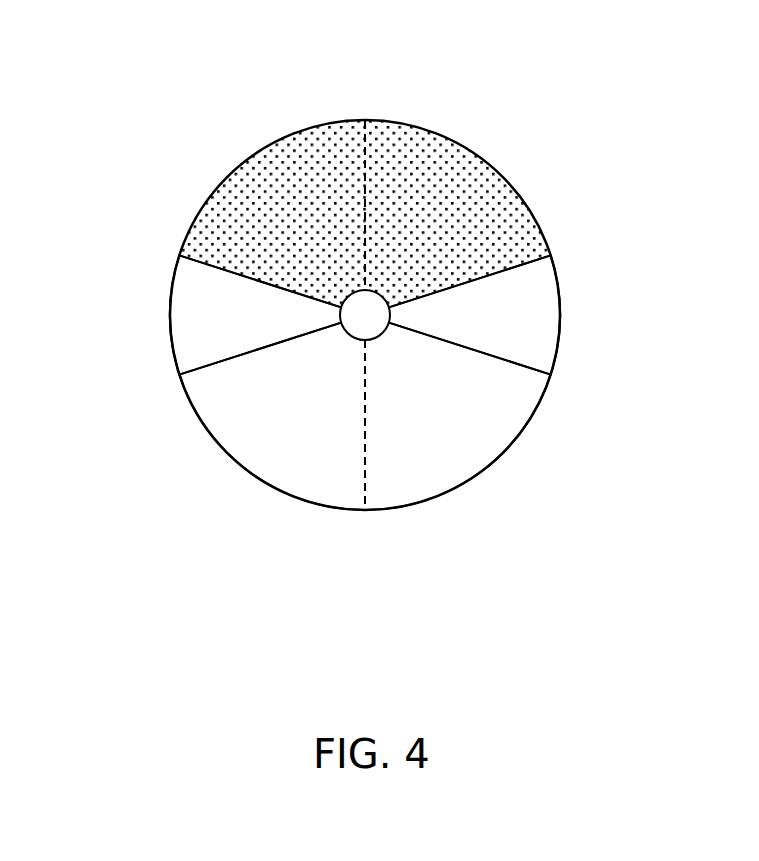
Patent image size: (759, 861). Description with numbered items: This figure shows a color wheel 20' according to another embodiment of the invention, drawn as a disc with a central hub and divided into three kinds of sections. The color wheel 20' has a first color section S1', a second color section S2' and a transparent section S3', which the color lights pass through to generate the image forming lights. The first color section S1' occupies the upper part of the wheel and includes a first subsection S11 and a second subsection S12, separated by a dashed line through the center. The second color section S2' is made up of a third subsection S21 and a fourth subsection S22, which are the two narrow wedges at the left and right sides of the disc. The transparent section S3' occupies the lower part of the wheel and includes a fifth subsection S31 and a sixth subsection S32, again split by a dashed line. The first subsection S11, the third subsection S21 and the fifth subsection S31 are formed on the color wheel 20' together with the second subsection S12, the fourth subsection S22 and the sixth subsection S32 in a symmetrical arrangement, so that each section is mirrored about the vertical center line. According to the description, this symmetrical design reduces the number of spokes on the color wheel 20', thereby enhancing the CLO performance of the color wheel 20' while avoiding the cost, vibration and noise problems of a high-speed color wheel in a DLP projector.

The color wheel 20' is at (450, 270).
The first color section S1' is at (364, 166).
The first subsection S11 is at (310, 160).
The second subsection S12 is at (458, 192).
The second color section S2' is at (355, 487).
The third subsection S21 is at (190, 330).
The fourth subsection S22 is at (538, 332).
The transparent section S3' is at (364, 467).
The fifth subsection S31 is at (310, 470).
The sixth subsection S32 is at (420, 470).